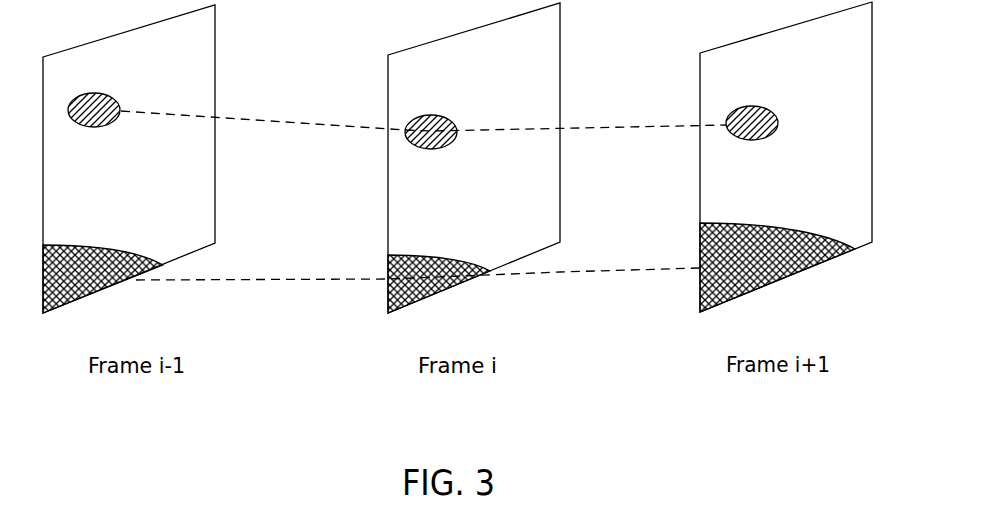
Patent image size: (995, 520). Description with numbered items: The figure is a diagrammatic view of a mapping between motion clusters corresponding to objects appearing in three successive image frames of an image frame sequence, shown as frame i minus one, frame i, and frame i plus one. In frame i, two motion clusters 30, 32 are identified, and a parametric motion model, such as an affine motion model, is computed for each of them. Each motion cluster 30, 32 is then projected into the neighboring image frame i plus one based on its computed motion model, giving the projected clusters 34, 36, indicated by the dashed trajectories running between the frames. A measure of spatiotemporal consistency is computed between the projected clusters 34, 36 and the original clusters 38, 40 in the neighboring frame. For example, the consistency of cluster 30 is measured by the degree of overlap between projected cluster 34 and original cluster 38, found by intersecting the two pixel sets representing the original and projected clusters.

The motion cluster 30 is at (431, 115).
The motion cluster 32 is at (441, 255).
The projected cluster 34 is at (640, 97).
The projected cluster 36 is at (636, 265).
The original cluster 38 is at (752, 105).
The original cluster 40 is at (743, 223).